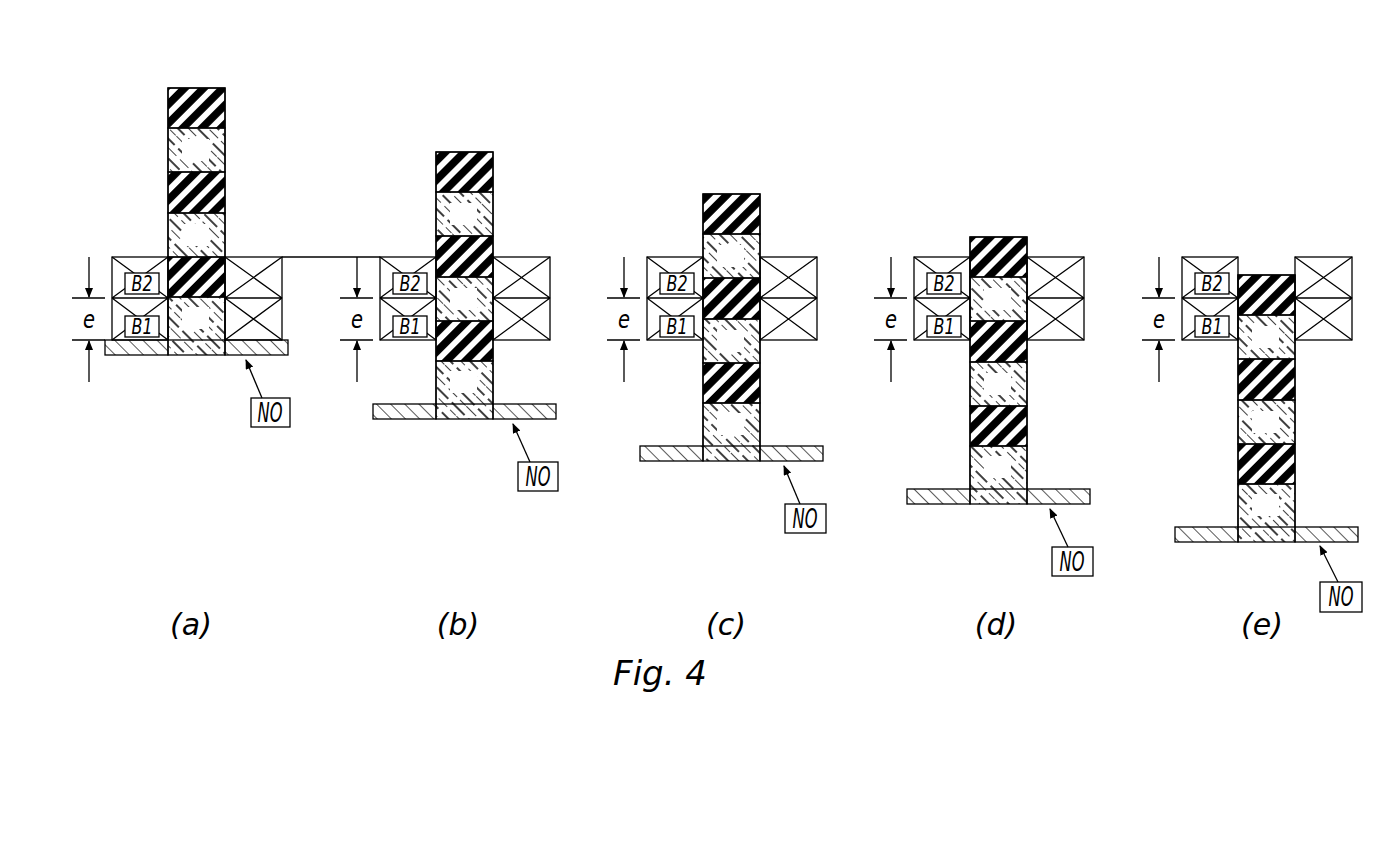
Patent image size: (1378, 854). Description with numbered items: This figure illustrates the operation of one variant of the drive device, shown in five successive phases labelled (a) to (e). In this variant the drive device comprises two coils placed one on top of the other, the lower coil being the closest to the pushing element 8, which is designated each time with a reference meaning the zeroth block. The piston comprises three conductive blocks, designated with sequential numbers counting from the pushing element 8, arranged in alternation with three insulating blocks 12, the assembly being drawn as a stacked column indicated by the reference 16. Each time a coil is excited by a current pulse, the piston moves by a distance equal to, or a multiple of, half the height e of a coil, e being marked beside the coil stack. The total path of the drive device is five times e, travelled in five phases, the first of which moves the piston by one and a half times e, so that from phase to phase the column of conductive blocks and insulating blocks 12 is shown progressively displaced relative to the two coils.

The stack of layers / magnetic circuit 16 is at (207, 72).
The insulating block 12 is at (212, 102).
The pushing element 8 is at (168, 349).